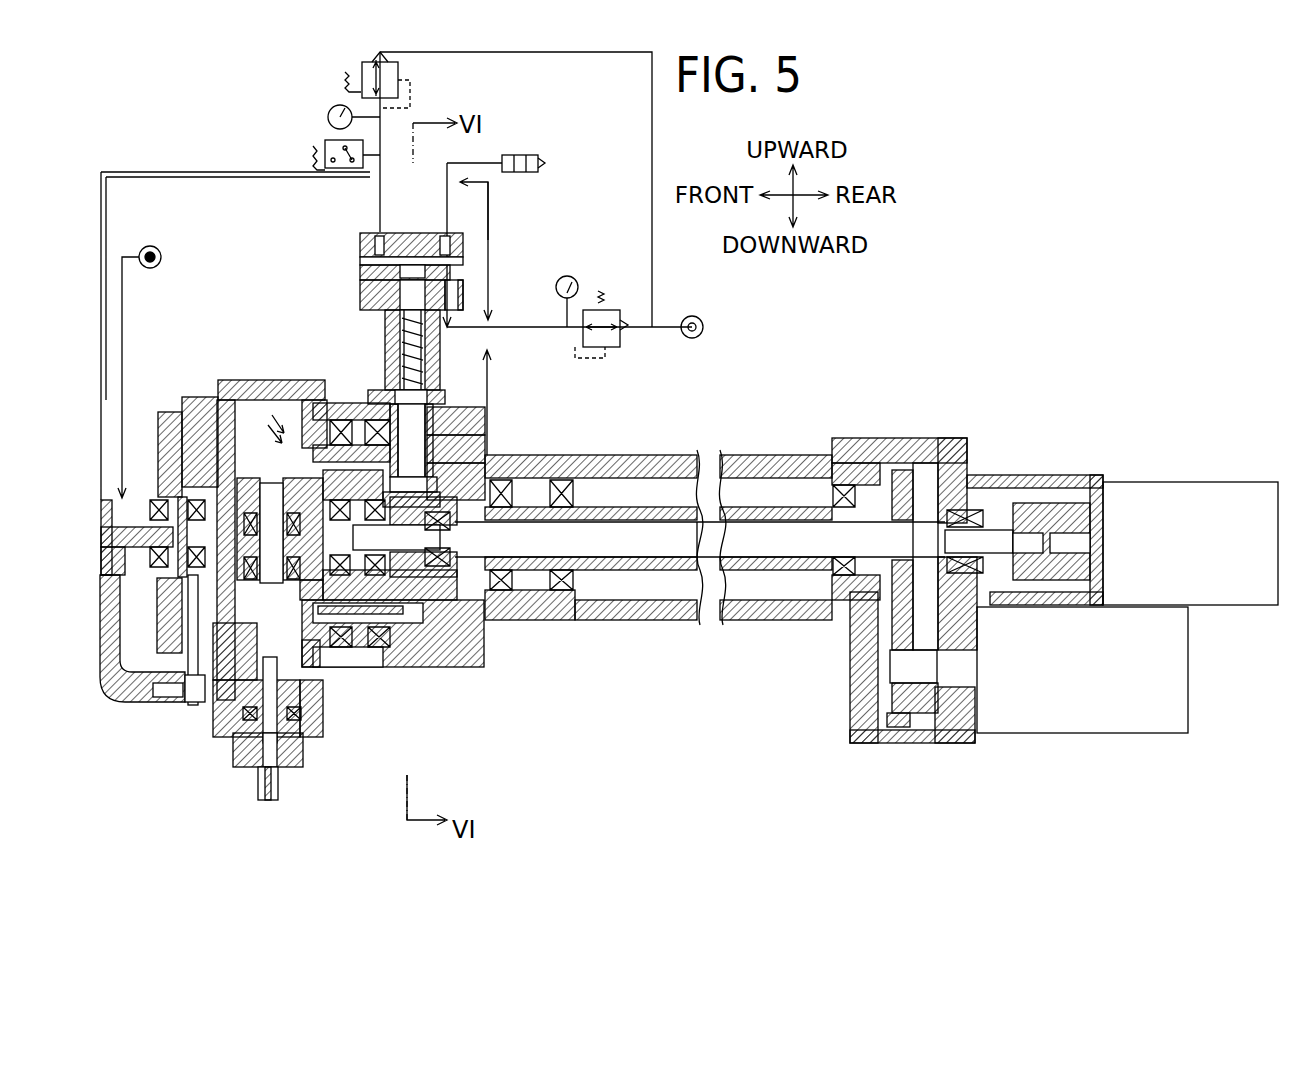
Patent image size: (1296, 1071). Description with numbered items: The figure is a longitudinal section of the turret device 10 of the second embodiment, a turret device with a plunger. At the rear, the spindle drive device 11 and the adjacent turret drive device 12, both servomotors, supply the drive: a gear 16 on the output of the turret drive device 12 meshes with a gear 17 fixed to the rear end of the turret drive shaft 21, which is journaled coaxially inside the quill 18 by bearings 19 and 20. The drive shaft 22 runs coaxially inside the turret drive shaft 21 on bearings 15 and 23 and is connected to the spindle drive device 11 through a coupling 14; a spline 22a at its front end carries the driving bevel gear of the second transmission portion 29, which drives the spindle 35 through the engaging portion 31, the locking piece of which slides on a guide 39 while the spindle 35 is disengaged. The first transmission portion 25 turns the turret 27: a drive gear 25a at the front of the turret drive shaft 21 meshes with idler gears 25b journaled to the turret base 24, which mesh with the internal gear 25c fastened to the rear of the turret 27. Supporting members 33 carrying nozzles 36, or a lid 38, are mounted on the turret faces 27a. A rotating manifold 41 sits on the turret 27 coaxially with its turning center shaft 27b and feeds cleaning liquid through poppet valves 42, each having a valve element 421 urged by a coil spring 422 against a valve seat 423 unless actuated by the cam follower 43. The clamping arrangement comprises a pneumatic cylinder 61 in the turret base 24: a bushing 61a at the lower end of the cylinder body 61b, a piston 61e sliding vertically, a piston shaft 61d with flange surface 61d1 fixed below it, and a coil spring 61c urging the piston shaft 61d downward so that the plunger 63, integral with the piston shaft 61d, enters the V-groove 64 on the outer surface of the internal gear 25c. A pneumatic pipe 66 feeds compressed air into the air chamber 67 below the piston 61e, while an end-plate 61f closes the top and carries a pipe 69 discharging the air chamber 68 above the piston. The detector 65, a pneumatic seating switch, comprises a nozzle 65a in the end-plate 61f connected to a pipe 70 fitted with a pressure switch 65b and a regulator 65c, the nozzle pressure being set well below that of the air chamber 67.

The turret device 10 is at (915, 269).
The spindle drive device 11 is at (1180, 502).
The turret drive device 12 is at (1080, 707).
The coupling 14 is at (1060, 505).
The bearing 15 is at (983, 502).
The gear 16 is at (912, 745).
The gear 17 is at (955, 474).
The quill 18 is at (685, 454).
The bearing 19 is at (850, 437).
The bearing 20 is at (565, 609).
The turret drive shaft 21 is at (748, 510).
The drive shaft 22 is at (648, 542).
The spline 22a is at (400, 560).
The bearing 23 is at (415, 575).
The turret base 24 is at (370, 652).
The first transmission portion 25 is at (624, 370).
The drive gear 25a is at (480, 464).
The idler gear 25b is at (480, 447).
The internal gear 25c is at (480, 427).
The turret 27 is at (400, 667).
The turret face 27a is at (328, 700).
The turning center shaft 27b is at (378, 670).
The second transmission portion 29 is at (265, 393).
The engaging portion 31 is at (322, 672).
The supporting member 33 is at (330, 748).
The spindle 35 is at (295, 768).
The nozzle 36 is at (258, 795).
The lid 38 is at (272, 390).
The guide 39 is at (215, 400).
The rotating manifold 41 is at (167, 383).
The poppet valve 42 is at (110, 715).
The valve element 421 is at (175, 605).
The coil spring 422 is at (185, 710).
The valve seat 423 is at (190, 712).
The cam follower 43 is at (197, 705).
The pneumatic cylinder 61 is at (272, 355).
The bushing 61a is at (382, 362).
The cylinder body 61b is at (365, 250).
The coil spring 61c is at (385, 325).
The piston shaft 61d is at (370, 293).
The flange surface 61d1 is at (450, 312).
The piston 61e is at (370, 268).
The end-plate 61f is at (365, 240).
The plunger 63 is at (440, 415).
The V-groove 64 is at (440, 445).
The detector 65 is at (232, 50).
The nozzle 65a is at (360, 232).
The pressure switch 65b is at (318, 158).
The regulator 65c is at (345, 82).
The pneumatic pipe 66 is at (518, 315).
The air chamber 67 is at (470, 278).
The air chamber 68 is at (490, 227).
The pipe 69 is at (478, 165).
The pipe 70 is at (385, 232).